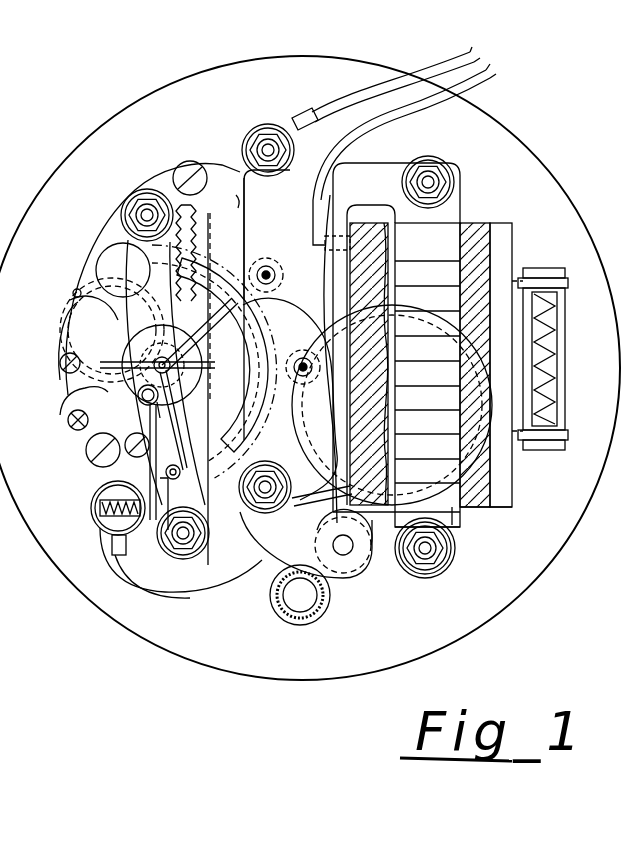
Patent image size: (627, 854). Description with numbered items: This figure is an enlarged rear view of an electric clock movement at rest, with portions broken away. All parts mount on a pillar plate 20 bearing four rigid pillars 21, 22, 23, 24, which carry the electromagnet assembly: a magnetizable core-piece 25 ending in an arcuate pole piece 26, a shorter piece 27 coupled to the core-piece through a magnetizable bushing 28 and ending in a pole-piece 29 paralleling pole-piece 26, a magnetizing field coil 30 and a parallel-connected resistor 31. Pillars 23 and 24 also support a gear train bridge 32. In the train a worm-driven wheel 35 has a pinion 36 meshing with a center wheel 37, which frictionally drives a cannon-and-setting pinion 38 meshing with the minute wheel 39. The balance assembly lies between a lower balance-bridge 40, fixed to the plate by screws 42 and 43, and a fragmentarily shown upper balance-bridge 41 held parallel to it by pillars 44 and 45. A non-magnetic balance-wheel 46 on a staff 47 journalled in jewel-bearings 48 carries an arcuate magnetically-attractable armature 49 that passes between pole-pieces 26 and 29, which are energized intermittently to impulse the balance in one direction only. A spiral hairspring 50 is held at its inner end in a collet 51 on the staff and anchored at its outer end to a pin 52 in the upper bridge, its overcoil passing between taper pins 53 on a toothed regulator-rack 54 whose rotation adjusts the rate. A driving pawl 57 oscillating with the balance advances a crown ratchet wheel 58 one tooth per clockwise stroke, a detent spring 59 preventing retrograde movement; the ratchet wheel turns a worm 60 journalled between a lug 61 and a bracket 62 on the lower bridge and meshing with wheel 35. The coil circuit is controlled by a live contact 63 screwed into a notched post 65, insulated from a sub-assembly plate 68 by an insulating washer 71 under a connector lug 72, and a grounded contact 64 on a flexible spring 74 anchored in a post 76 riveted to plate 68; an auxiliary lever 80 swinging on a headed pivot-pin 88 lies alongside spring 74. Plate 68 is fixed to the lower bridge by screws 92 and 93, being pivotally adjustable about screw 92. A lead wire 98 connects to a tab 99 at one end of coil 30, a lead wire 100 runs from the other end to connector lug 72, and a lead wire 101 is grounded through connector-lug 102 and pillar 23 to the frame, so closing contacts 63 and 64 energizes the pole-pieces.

The pillar plate 20 is at (515, 165).
The pillar 21 is at (432, 178).
The pillar 22 is at (432, 548).
The pillar 23 is at (258, 138).
The pillar 24 is at (267, 486).
The magnetizable core-piece 25 is at (445, 226).
The pole piece 26 is at (272, 322).
The shorter piece 27 is at (384, 552).
The magnetizable bushing 28 is at (450, 566).
The pole-piece 29 is at (260, 397).
The magnetizing field coil 30 is at (482, 266).
The resistor 31 is at (550, 385).
The gear train bridge 32 is at (252, 175).
The worm-driven wheel 35 is at (229, 189).
The pinion 36 is at (268, 258).
The center wheel 37 is at (369, 364).
The cannon-and-setting pinion 38 is at (393, 344).
The minute wheel 39 is at (455, 513).
The lower balance-bridge 40 is at (163, 182).
The upper balance-bridge 41 is at (118, 236).
The screw 42 is at (186, 170).
The screw 43 is at (90, 455).
The pillar 44 is at (140, 210).
The pillar 45 is at (190, 532).
The balance-wheel 46 is at (78, 302).
The staff 47 is at (171, 365).
The jewel-bearings 48 is at (187, 352).
The armature 49 is at (212, 272).
The spiral hairspring 50 is at (195, 398).
The collet 51 is at (173, 376).
The pin 52 is at (181, 420).
The taper pins 53 is at (86, 367).
The regulator-rack 54 is at (70, 300).
The driving pawl 57 is at (112, 330).
The crown ratchet wheel 58 is at (200, 333).
The detent spring 59 is at (100, 341).
The worm 60 is at (197, 229).
The lug 61 is at (194, 247).
The bracket 62 is at (85, 290).
The live contact 63 is at (163, 480).
The contact 64 is at (130, 527).
The notched post 65 is at (105, 503).
The sub-assembly plate 68 is at (62, 412).
The insulating washer 71 is at (100, 518).
The connector lug 72 is at (118, 540).
The flexible spring 74 is at (156, 404).
The post 76 is at (138, 394).
The auxiliary lever 80 is at (170, 465).
The headed pivot-pin 88 is at (183, 472).
The screw 92 is at (68, 420).
The screw 93 is at (134, 438).
The lead wire 98 is at (478, 68).
The tab 99 is at (352, 229).
The lead wire 100 is at (162, 588).
The lead wire 101 is at (360, 98).
The connector-lug 102 is at (298, 119).